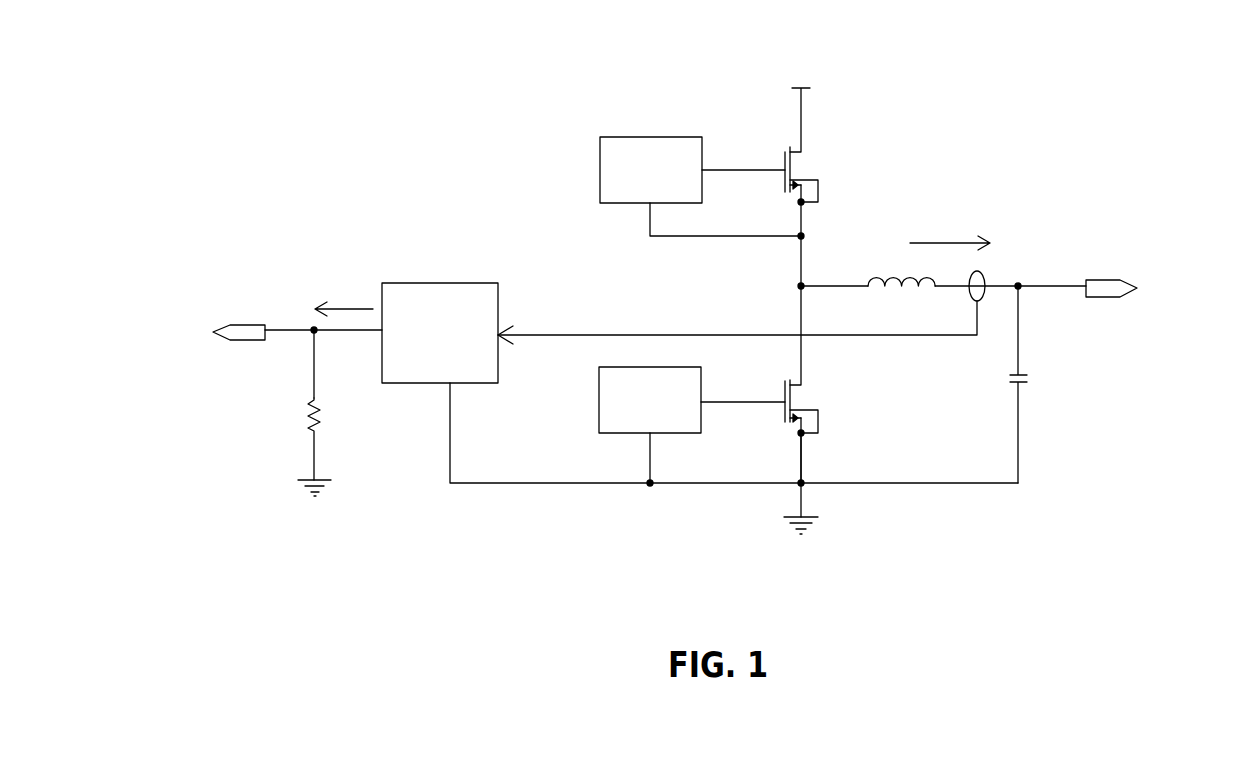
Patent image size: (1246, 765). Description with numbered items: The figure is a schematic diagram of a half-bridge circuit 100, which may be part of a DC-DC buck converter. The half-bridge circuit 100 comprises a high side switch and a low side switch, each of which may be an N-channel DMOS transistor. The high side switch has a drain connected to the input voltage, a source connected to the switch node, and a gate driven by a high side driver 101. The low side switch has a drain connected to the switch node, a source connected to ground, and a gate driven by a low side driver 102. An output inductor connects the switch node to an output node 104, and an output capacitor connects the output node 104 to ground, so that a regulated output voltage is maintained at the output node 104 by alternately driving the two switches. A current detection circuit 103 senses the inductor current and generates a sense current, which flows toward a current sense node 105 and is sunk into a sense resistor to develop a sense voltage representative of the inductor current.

The half-bridge circuit 100 is at (368, 90).
The high side driver 101 is at (617, 137).
The low side driver 102 is at (597, 401).
The current detection circuit 103 is at (464, 283).
The output node 104 is at (1112, 280).
The current sense node 105 is at (232, 325).